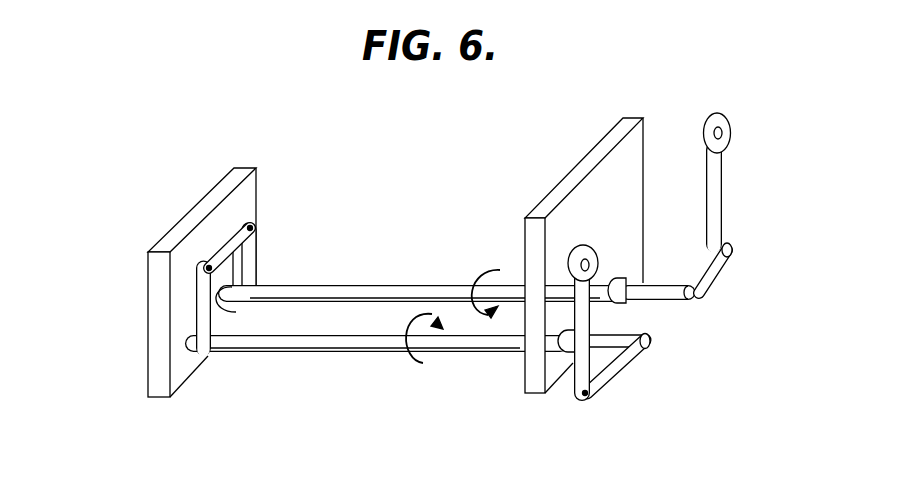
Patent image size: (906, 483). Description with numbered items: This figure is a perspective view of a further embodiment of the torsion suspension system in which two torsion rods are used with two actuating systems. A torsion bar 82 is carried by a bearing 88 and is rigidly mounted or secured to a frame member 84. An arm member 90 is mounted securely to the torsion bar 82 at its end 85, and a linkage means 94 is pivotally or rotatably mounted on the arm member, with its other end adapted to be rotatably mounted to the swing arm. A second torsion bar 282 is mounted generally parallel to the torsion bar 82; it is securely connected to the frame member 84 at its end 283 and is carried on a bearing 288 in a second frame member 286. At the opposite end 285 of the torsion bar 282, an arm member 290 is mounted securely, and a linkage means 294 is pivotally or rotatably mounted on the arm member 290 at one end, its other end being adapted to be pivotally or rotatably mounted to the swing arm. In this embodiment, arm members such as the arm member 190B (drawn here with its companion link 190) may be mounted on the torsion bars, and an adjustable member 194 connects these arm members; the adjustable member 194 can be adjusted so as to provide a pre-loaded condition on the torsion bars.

The frame member 84 is at (183, 234).
The adjustable member 194 is at (224, 250).
The arm member 190B is at (243, 263).
The second torsion bar 282 is at (398, 283).
The end 283 is at (236, 312).
The link 190 is at (205, 310).
The torsion bar 82 is at (348, 340).
The bearing 288 is at (617, 278).
The linkage means 294 is at (717, 173).
The arm member 290 is at (730, 258).
The end 285 is at (700, 293).
The linkage means 94 is at (588, 313).
The bearing 88 is at (565, 353).
The end 85 is at (648, 343).
The arm member 90 is at (615, 370).
The frame member 286 is at (535, 388).